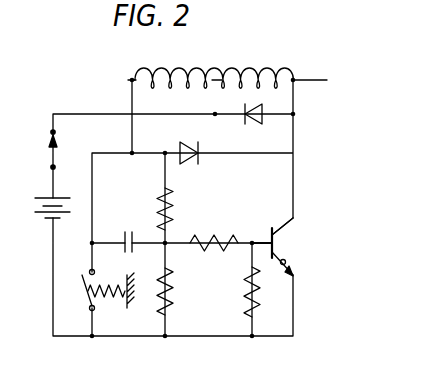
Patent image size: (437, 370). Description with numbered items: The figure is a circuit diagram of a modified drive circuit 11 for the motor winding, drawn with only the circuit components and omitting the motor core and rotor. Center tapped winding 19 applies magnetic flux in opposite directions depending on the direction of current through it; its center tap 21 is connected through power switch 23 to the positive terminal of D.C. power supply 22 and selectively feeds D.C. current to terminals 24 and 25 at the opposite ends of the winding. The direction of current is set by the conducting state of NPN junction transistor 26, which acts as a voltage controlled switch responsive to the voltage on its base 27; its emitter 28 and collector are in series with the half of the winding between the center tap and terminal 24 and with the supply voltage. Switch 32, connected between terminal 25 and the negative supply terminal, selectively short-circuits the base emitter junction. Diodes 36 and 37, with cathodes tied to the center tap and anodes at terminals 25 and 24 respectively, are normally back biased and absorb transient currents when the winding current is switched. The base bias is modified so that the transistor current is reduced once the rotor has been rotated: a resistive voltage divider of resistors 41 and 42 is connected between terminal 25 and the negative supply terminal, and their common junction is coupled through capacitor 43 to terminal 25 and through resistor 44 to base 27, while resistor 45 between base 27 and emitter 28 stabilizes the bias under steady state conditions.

The lamp circuit 11 is at (0, 38).
The center tapped winding 19 is at (244, 67).
The center tap 21 is at (217, 85).
The D.C. power supply 22 is at (45, 190).
The power switch 23 is at (52, 150).
The terminal 24 is at (283, 223).
The terminal 25 is at (132, 79).
The NPN junction transistor 26 is at (299, 241).
The base 27 is at (267, 232).
The emitter 28 is at (289, 260).
The switch 32 is at (88, 298).
The diode 36 is at (188, 142).
The diode 37 is at (252, 123).
The resistor 41 is at (167, 192).
The resistor 42 is at (160, 300).
The capacitor 43 is at (123, 237).
The resistor 44 is at (221, 252).
The resistor 45 is at (244, 301).